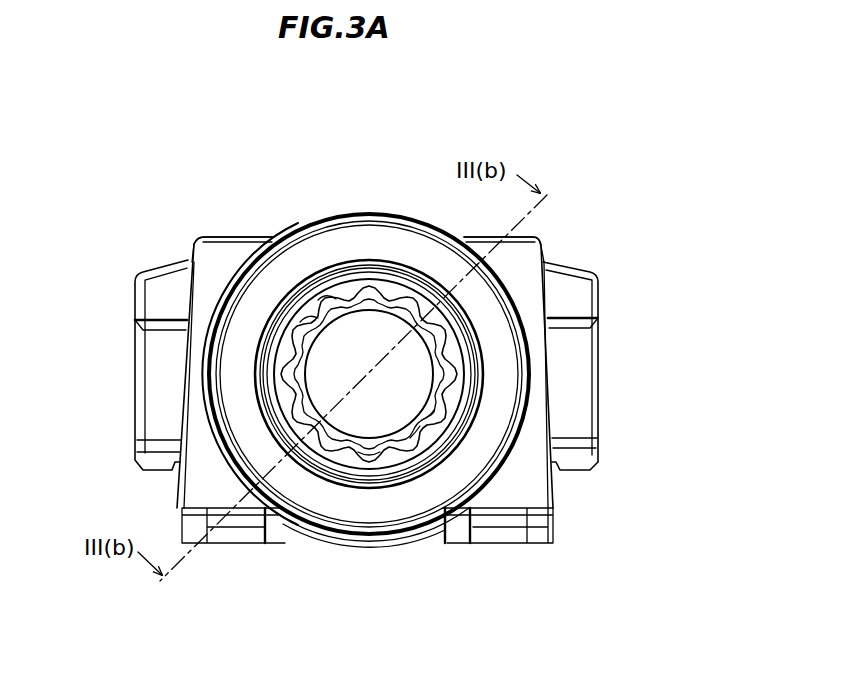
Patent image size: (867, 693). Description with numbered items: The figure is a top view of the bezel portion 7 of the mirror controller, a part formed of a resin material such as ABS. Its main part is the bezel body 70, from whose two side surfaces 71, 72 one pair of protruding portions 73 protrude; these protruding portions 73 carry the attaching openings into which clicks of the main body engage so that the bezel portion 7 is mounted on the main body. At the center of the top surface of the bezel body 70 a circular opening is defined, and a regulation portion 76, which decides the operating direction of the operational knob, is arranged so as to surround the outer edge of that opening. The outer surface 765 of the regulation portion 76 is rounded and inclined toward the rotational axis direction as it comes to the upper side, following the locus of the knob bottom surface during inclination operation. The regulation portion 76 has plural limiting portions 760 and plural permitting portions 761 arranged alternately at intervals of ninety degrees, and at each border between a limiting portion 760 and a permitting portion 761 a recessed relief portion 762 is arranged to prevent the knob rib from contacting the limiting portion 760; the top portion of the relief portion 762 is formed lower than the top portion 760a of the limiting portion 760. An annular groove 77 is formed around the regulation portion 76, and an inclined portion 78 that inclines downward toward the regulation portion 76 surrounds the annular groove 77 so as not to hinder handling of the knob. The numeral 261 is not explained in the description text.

The bezel portion 7 is at (612, 150).
The bezel body 70 is at (332, 548).
The side surface 71 is at (188, 252).
The side surface 72 is at (542, 250).
The protruding portions 73 is at (157, 340).
The regulation portion 76 is at (447, 420).
The annular groove 77 is at (337, 297).
The inclined portion 78 is at (345, 250).
The shaft hole 261 is at (277, 373).
The limiting portions 760 is at (367, 290).
The top portion of the limiting portion 760a is at (417, 430).
The permitting portions 761 is at (369, 468).
The relief portion 762 is at (293, 342).
The outer surface 765 is at (425, 423).